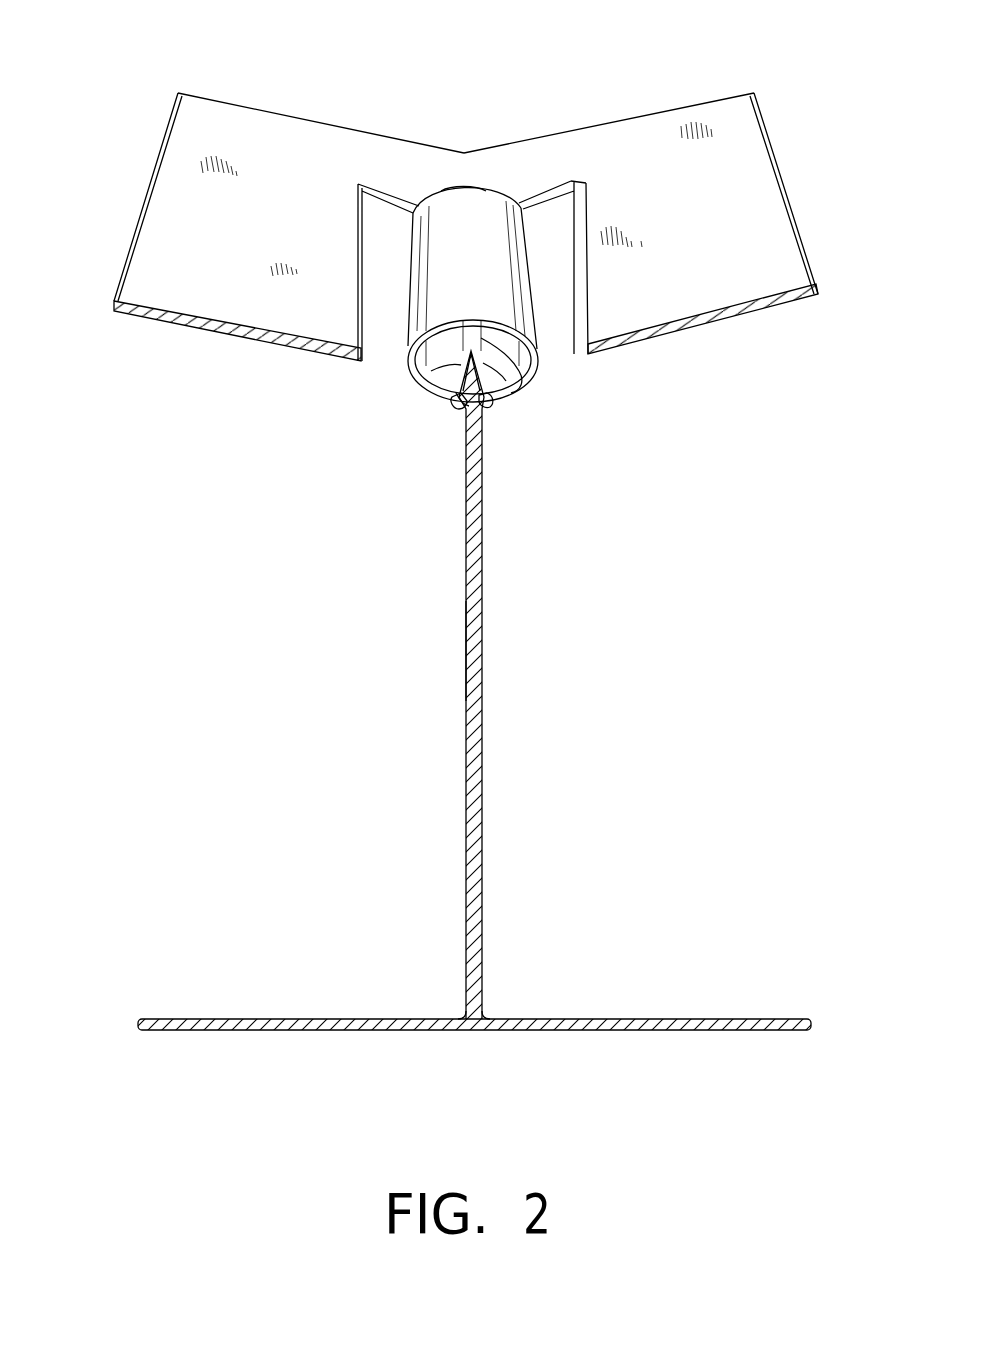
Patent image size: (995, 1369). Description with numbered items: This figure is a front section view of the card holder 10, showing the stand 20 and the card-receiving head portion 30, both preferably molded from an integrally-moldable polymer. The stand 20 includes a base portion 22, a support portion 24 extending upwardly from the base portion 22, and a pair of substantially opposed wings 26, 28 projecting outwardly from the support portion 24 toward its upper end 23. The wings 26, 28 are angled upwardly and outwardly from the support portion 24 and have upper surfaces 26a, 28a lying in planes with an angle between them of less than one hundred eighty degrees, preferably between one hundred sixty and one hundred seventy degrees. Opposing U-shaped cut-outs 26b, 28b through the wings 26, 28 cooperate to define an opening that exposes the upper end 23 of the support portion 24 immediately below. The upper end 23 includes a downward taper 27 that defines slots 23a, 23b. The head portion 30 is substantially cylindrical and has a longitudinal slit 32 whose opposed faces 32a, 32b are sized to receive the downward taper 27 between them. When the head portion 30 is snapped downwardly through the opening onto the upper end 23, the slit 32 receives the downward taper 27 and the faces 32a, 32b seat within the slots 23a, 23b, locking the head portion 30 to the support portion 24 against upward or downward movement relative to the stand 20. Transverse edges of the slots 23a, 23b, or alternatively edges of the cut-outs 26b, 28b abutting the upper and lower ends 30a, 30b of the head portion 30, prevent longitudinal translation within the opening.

The card holder 10 is at (612, 457).
The stand 20 is at (481, 598).
The base portion 22 is at (595, 1018).
The support portion 24 is at (464, 643).
The wing 26 is at (727, 237).
The upper surface 26a is at (663, 198).
The U-shaped cut-out 26b is at (570, 345).
The wing 28 is at (222, 300).
The upper surface 28a is at (233, 138).
The U-shaped cut-out 28b is at (390, 370).
The card-receiving head portion 30 is at (510, 197).
The upper end 30a is at (443, 185).
The lower end 30b is at (445, 342).
The upper end 23 is at (506, 392).
The slot 23a is at (460, 398).
The slot 23b is at (489, 410).
The downward taper 27 is at (452, 405).
The longitudinal slit 32 is at (478, 404).
The opposed face 32a is at (466, 406).
The opposed face 32b is at (458, 416).